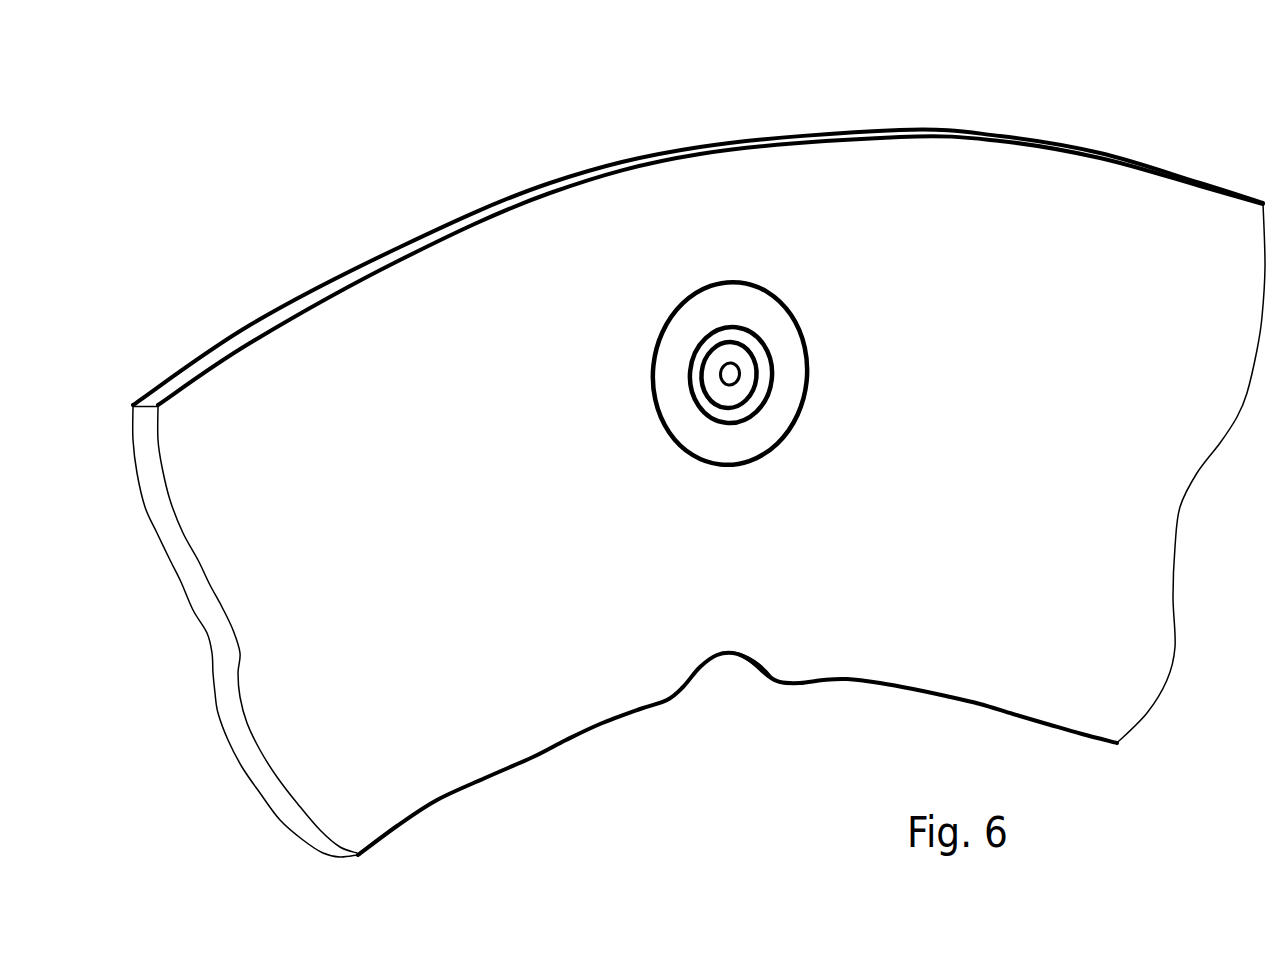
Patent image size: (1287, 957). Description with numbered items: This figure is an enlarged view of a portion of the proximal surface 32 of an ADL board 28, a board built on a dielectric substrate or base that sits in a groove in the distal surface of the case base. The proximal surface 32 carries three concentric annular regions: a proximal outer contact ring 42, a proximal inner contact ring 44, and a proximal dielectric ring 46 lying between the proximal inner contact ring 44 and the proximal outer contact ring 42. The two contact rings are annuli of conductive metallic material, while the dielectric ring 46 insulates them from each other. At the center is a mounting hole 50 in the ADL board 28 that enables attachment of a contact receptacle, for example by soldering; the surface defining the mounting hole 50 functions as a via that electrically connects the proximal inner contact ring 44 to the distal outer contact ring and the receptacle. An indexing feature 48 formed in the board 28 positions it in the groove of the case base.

The ADL board 28 is at (699, 455).
The proximal surface 32 is at (255, 382).
The proximal outer contact ring 42 is at (780, 318).
The proximal inner contact ring 44 is at (750, 367).
The proximal dielectric ring 46 is at (760, 358).
The indexing feature 48 is at (730, 670).
The mounting hole 50 is at (730, 380).